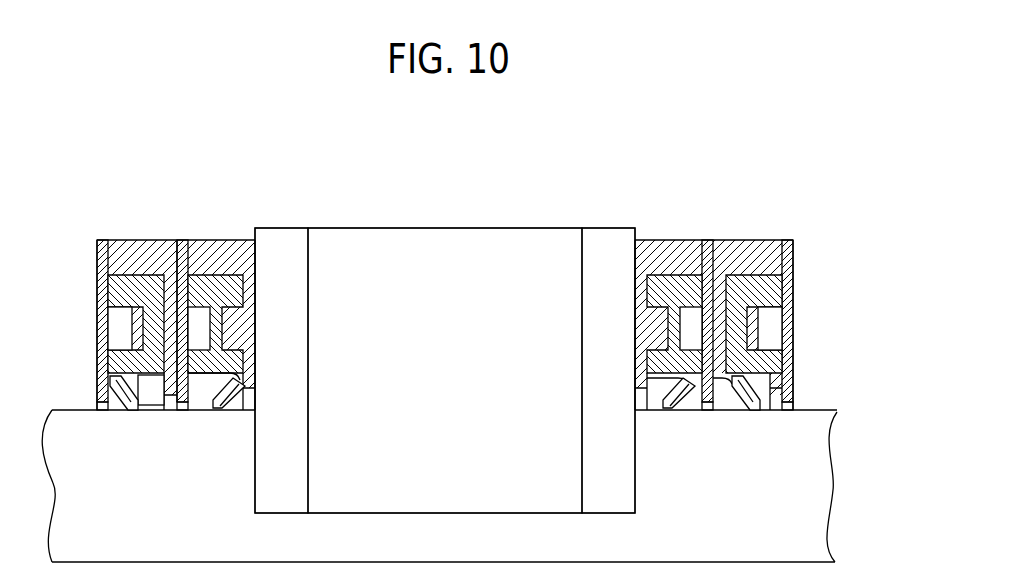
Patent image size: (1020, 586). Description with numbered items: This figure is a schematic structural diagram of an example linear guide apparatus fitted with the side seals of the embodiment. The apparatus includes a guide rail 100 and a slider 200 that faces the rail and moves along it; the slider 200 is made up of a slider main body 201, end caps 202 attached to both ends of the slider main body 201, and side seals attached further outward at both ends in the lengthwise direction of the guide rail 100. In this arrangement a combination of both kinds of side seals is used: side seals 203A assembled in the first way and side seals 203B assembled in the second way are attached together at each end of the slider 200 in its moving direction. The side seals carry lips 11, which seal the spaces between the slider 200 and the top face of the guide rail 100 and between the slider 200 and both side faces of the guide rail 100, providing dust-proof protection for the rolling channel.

The guide rail 100 is at (67, 408).
The lips 11 is at (238, 386).
The slider 200 is at (515, 222).
The slider main body 201 is at (442, 237).
The end caps 202 is at (284, 237).
The side seals 203A is at (203, 240).
The side seals 203B is at (124, 240).